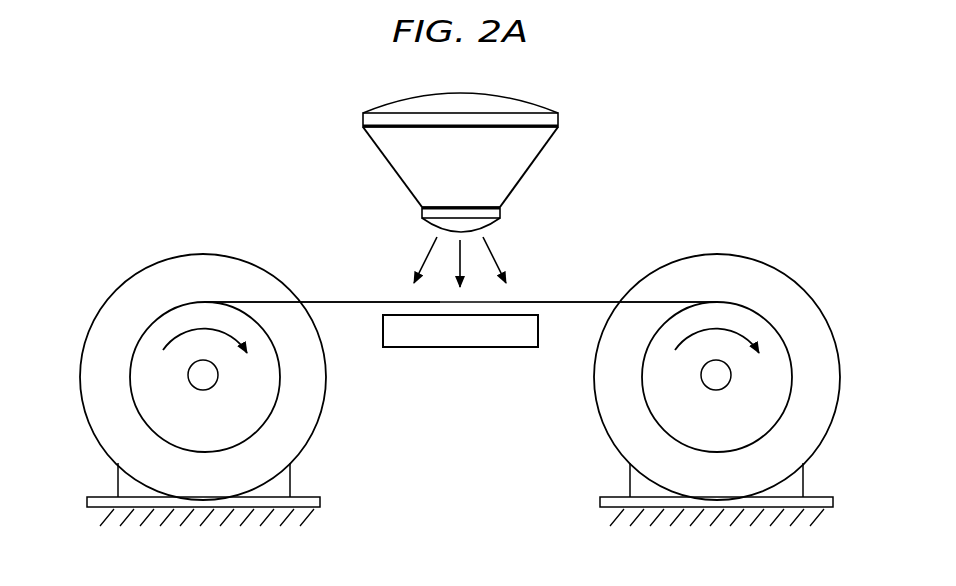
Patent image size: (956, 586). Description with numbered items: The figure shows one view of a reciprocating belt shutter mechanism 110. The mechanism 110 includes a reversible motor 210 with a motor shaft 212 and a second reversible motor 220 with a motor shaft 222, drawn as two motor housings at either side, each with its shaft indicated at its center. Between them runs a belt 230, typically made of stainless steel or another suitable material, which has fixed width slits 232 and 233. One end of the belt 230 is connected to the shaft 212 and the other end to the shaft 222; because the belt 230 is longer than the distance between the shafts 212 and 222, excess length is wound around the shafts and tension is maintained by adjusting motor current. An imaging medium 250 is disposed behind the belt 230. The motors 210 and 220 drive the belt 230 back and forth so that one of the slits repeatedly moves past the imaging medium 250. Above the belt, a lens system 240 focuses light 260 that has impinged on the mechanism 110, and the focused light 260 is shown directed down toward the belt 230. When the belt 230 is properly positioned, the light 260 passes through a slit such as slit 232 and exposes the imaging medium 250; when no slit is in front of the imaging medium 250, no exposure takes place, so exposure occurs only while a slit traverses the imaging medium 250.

The reciprocating belt shutter mechanism 110 is at (686, 136).
The reversible motor 210 is at (712, 255).
The motor shaft 212 is at (793, 377).
The reversible motor 220 is at (200, 255).
The motor shaft 222 is at (130, 352).
The belt 230 is at (565, 303).
The fixed width slit 232 is at (407, 302).
The fixed width slit 233 is at (578, 302).
The lens system 240 is at (363, 113).
The imaging medium 250 is at (460, 348).
The light 260 is at (398, 259).